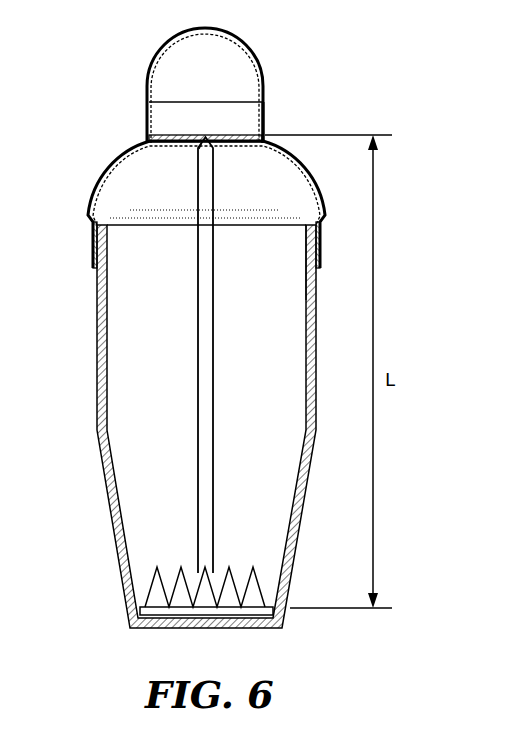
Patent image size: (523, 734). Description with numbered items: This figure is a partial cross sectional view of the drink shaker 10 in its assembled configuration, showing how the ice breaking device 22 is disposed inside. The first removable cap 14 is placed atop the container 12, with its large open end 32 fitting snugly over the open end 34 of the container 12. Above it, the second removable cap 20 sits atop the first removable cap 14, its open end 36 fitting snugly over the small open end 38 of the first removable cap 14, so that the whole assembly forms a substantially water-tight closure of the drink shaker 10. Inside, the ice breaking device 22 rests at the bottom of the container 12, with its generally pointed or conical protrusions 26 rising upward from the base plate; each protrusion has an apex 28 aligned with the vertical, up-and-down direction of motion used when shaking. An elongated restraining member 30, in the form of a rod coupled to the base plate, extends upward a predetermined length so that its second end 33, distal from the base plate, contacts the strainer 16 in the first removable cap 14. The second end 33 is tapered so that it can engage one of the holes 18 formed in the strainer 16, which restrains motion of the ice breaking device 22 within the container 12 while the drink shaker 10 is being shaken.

The drink shaker 10 is at (46, 327).
The container 12 is at (97, 316).
The first removable cap 14 is at (112, 168).
The strainer 16 is at (178, 135).
The holes 18 is at (203, 137).
The second removable cap 20 is at (147, 82).
The ice breaking device 22 is at (234, 524).
The protrusions 26 is at (142, 610).
The apex 28 is at (158, 570).
The elongated restraining member 30 is at (197, 486).
The large open end 32 is at (318, 262).
The second end 33 is at (199, 149).
The open end 34 is at (304, 238).
The open end 36 is at (265, 124).
The small open end 38 is at (256, 102).